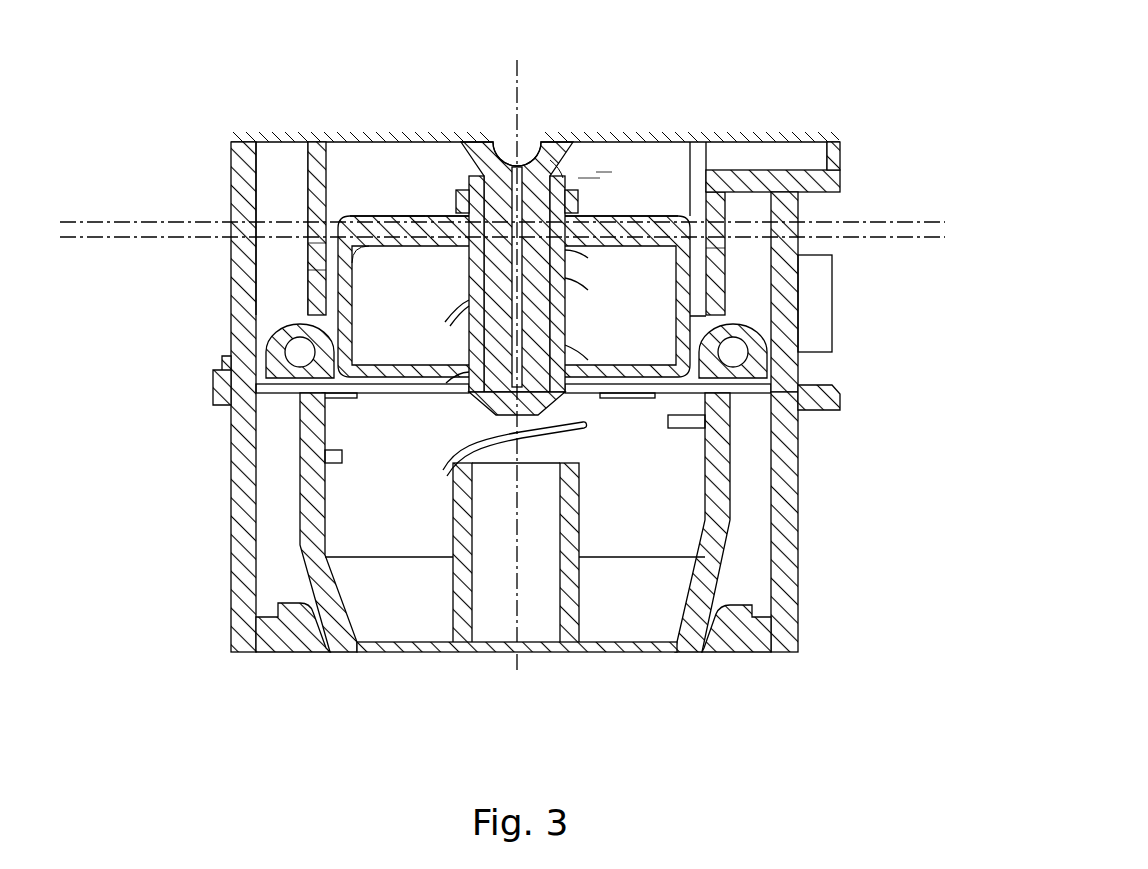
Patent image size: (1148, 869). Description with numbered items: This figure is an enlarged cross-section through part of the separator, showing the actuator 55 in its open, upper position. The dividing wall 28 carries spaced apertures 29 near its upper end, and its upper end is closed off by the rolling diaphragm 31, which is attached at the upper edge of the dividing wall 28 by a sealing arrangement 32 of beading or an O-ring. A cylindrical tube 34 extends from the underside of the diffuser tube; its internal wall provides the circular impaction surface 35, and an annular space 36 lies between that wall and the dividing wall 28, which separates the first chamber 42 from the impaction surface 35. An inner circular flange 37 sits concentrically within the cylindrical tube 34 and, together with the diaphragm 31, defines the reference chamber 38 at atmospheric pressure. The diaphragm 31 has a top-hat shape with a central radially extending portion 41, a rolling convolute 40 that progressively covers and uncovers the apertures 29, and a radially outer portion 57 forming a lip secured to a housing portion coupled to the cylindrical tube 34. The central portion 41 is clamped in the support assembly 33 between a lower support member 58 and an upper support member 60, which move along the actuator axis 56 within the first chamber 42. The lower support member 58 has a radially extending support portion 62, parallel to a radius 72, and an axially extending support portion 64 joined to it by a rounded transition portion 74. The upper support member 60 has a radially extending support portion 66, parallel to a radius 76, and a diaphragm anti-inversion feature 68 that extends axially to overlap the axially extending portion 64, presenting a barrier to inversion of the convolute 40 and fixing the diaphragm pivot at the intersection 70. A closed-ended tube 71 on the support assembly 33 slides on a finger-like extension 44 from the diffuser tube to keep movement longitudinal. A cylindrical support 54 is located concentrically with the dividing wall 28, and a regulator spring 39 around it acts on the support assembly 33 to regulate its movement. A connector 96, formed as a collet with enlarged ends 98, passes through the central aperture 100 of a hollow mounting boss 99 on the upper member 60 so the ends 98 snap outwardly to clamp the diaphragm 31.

The dividing wall 28 is at (738, 616).
The apertures 29 is at (322, 452).
The rolling diaphragm 31 is at (726, 248).
The sealing arrangement 32 is at (770, 300).
The support assembly 33 is at (318, 230).
The cylindrical tube 34 is at (735, 580).
The impaction surface 35 is at (766, 520).
The annular space 36 is at (272, 428).
The inner circular flange 37 is at (756, 313).
The reference chamber 38 is at (288, 160).
The regulator spring 39 is at (447, 607).
The rolling convolute 40 is at (318, 269).
The radially extending portion 41 is at (692, 200).
The first chamber 42 is at (700, 532).
The finger-like extension 44 is at (482, 273).
The cylindrical support 54 is at (583, 600).
The actuator 55 is at (590, 172).
The actuator axis 56 is at (521, 66).
The radially outer portion 57 is at (760, 328).
The lower support member 58 is at (376, 220).
The upper support member 60 is at (439, 203).
The radially extending support portion 62 is at (407, 249).
The axially extending support portion 64 is at (232, 372).
The radially extending support portion 66 is at (411, 216).
The diaphragm anti-inversion feature 68 is at (690, 205).
The intersection 70 is at (318, 248).
The closed-ended tube 71 is at (565, 322).
The radius 72 is at (73, 237).
The transition portion 74 is at (703, 276).
The radius 76 is at (102, 222).
The connector 96 is at (563, 170).
The enlarged ends 98 is at (468, 188).
The hollow mounting boss 99 is at (624, 208).
The central aperture 100 is at (602, 168).